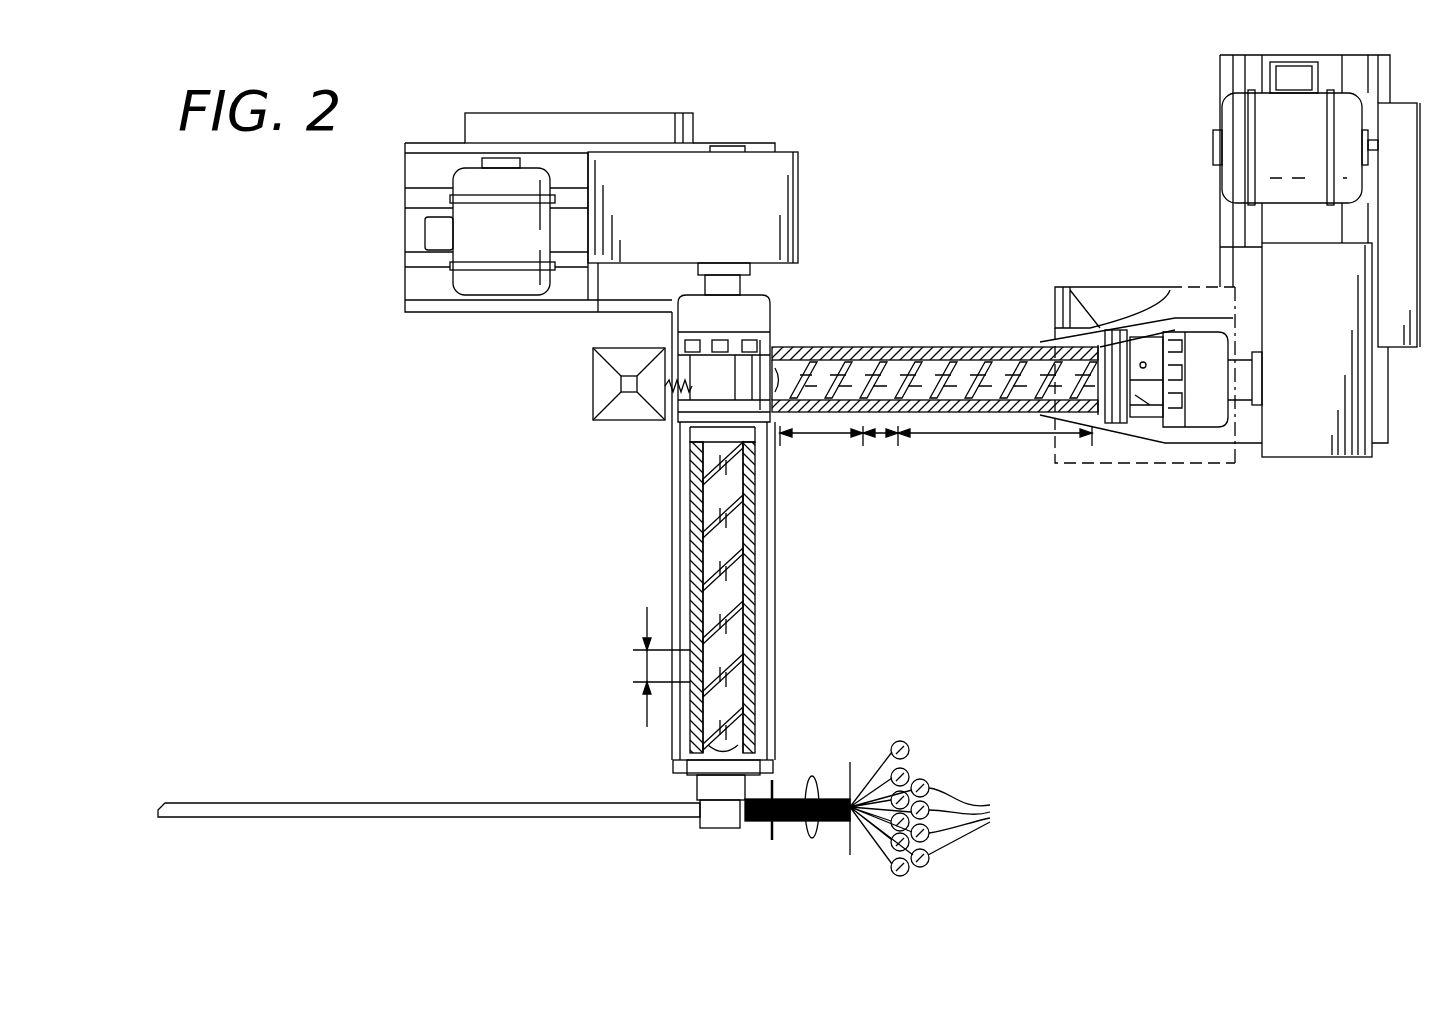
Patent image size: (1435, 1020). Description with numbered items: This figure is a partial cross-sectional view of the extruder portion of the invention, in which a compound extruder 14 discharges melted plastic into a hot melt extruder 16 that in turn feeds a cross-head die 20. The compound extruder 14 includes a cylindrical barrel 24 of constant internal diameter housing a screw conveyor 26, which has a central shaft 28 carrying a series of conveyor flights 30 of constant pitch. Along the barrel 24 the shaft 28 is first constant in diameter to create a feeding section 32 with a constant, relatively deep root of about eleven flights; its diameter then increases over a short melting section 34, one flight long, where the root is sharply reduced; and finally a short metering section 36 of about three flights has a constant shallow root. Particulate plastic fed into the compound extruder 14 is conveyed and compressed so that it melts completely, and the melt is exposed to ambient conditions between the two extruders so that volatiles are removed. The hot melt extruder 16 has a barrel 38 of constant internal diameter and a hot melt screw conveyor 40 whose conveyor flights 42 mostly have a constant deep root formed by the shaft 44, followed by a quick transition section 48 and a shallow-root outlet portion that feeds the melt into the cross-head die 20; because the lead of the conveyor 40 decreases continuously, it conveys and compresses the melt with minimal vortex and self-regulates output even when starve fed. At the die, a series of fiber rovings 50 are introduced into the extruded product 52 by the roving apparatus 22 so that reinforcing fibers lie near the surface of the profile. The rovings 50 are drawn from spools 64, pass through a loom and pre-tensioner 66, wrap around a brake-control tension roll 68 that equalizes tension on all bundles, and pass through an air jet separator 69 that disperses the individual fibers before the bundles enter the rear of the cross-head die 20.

The compound extruder 14 is at (1092, 222).
The hot melt extruder 16 is at (715, 590).
The cross-head die 20 is at (720, 822).
The roving apparatus 22 is at (966, 816).
The cylindrical barrel 24 is at (872, 350).
The screw conveyor 26 is at (826, 364).
The central shaft 28 is at (910, 352).
The conveyor flights 30 is at (963, 352).
The feeding section 32 is at (975, 445).
The melting section 34 is at (893, 440).
The metering section 36 is at (805, 438).
The barrel 38 is at (757, 498).
The hot melt screw conveyor 40 is at (735, 523).
The conveyor flights 42 is at (740, 557).
The shaft 44 is at (730, 583).
The transition section 48 is at (640, 660).
The fiber rovings 50 is at (870, 770).
The extruded product 52 is at (540, 770).
The spools 64 is at (935, 875).
The loom and pre-tensioner 66 is at (848, 850).
The brake-control tension roll 68 is at (812, 778).
The air jet separator 69 is at (773, 840).